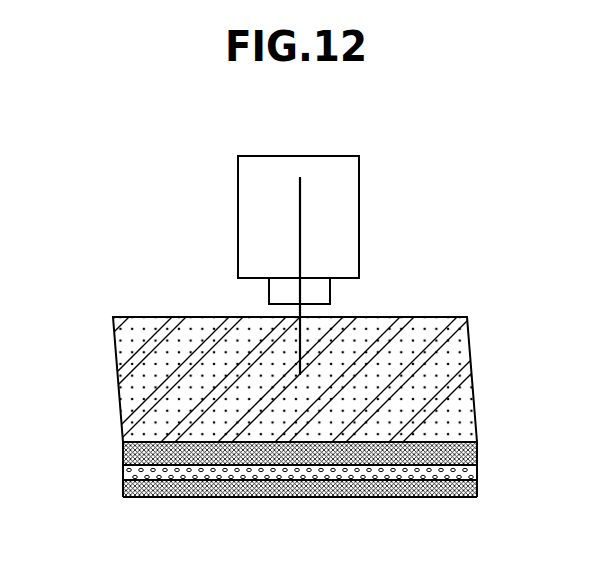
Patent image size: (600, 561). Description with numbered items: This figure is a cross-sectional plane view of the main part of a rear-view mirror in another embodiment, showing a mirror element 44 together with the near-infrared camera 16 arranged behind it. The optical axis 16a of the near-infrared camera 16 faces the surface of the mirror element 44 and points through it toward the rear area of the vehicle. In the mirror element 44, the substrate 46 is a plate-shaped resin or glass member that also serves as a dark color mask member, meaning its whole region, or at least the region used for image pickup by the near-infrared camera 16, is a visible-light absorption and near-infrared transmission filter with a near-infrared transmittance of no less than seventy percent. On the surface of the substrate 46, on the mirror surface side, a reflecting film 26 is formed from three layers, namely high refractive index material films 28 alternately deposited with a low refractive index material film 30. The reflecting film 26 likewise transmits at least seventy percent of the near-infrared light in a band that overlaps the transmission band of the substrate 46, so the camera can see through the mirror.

The near-infrared camera 16 is at (359, 158).
The optical axis 16a is at (301, 201).
The substrate 46 is at (425, 317).
The mirror element 44 is at (274, 393).
The reflecting film 26 is at (248, 480).
The high refractive index material film 28 is at (123, 455).
The low refractive index material film 30 is at (123, 479).